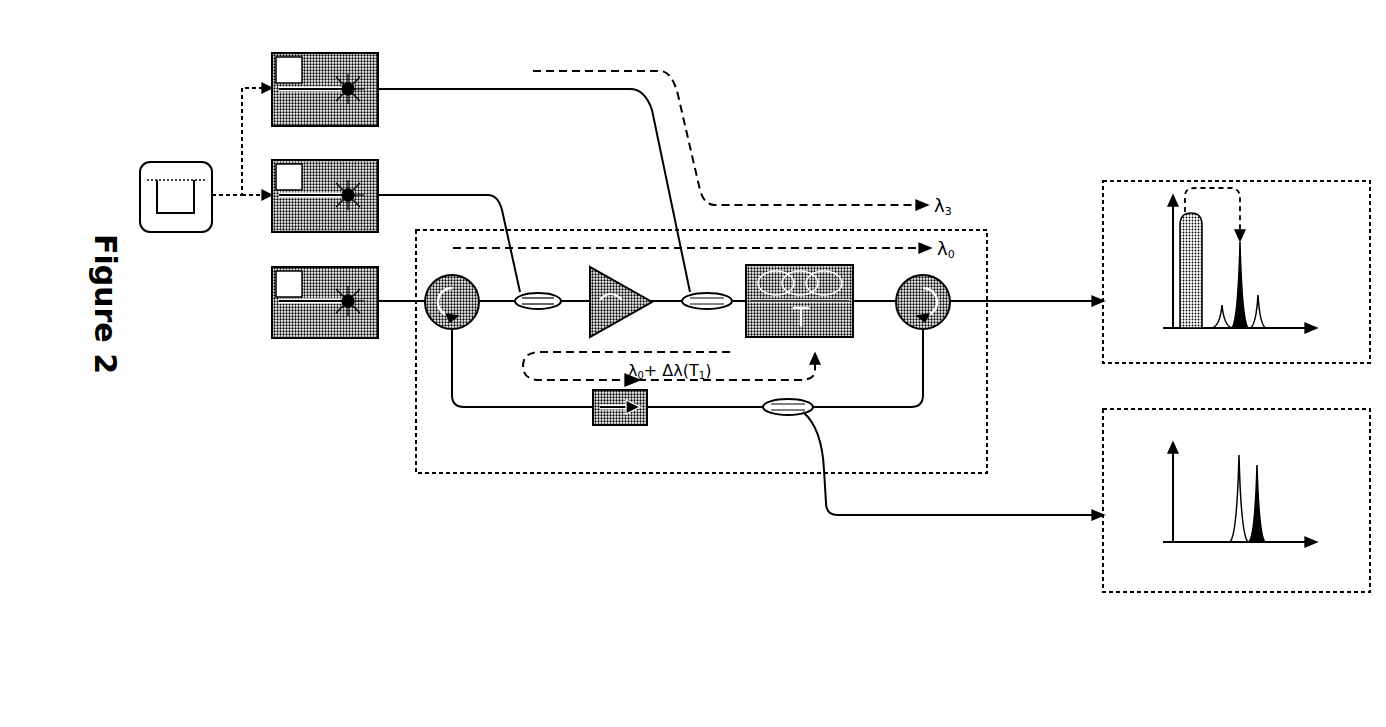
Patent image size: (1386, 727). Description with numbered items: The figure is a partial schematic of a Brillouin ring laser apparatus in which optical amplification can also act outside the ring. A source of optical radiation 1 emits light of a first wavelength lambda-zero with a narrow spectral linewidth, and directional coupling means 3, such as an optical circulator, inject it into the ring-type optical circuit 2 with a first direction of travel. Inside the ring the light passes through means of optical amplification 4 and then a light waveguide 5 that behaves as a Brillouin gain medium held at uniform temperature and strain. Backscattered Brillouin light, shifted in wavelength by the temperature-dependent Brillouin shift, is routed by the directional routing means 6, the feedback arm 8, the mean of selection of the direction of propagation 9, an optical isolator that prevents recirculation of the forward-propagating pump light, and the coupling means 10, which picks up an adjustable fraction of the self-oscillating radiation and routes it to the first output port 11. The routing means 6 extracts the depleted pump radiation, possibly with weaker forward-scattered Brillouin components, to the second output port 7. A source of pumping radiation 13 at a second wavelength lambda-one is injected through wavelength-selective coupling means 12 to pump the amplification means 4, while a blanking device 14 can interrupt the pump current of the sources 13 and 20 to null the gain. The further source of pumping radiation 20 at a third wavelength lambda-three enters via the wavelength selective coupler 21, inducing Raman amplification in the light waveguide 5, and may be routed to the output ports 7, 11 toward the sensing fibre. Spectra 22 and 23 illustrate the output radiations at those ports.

The source of optical radiation 1 is at (272, 338).
The ring-type optical circuit 2 is at (987, 230).
The directional coupling means 3 is at (432, 322).
The means of optical amplification 4 is at (638, 286).
The light waveguide 5 is at (866, 264).
The directional routing means 6 is at (946, 292).
The second output port 7 is at (1008, 300).
The feedback arm 8 is at (923, 390).
The mean of selection of the direction of propagation 9 is at (597, 425).
The coupling means 10 is at (780, 416).
The first output port 11 is at (1003, 513).
The wavelength-selective coupling means 12 is at (539, 292).
The source of pumping radiation 13 is at (378, 160).
The blanking device 14 is at (175, 162).
The further source of pumping radiation 20 is at (378, 53).
The wavelength selective coupler 21 is at (705, 292).
The spectrum analyser display 22 is at (1280, 181).
The spectrum analyser display 23 is at (1280, 409).